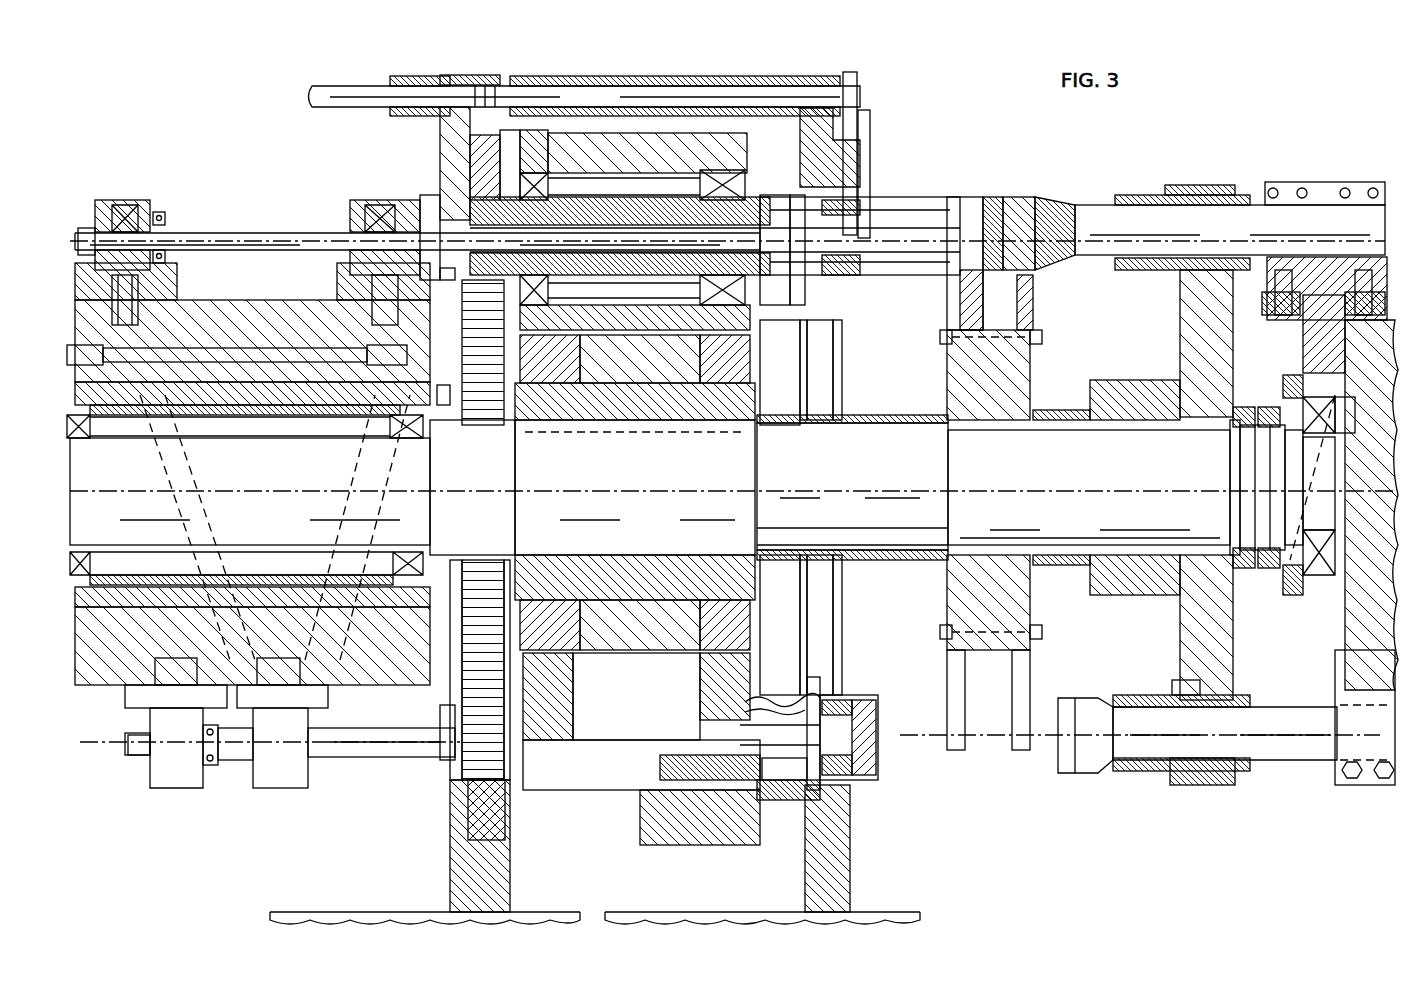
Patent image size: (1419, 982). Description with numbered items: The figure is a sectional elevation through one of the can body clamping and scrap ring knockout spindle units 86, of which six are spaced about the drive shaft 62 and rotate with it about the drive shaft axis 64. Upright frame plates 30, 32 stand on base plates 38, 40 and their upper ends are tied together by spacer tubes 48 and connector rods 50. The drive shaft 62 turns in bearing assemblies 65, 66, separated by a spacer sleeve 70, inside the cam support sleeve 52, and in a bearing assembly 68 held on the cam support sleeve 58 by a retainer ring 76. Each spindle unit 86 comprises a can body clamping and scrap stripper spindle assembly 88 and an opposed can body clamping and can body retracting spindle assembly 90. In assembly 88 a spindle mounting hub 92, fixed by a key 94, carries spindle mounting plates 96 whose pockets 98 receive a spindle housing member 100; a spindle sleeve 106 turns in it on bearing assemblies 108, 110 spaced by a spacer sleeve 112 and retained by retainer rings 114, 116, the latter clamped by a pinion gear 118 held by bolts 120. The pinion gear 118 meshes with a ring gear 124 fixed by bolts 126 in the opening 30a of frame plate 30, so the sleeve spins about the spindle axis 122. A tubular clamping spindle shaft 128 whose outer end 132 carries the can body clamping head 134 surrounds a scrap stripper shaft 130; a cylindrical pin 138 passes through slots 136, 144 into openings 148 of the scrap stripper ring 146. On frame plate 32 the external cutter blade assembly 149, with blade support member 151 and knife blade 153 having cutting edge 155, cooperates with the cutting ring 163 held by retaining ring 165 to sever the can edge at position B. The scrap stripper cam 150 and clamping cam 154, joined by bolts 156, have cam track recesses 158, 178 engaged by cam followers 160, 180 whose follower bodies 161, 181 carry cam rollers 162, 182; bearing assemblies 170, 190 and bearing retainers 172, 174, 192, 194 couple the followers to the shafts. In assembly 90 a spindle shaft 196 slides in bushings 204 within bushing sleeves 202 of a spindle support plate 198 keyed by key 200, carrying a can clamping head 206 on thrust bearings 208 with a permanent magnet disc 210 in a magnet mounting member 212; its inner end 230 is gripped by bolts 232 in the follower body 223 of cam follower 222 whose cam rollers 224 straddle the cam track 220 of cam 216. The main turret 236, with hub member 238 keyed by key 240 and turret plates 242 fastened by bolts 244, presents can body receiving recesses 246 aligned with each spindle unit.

The frame plate 30 is at (434, 879).
The radially stepped circular opening 30a is at (452, 800).
The frame plate 32 is at (866, 869).
The base plate 38 is at (322, 912).
The base plate 40 is at (888, 912).
The spacer tubes 48 is at (410, 76).
The connector rods 50 is at (355, 88).
The cam support sleeve 52 is at (262, 395).
The cam support sleeve 58 is at (1371, 505).
The drive shaft 62 is at (1037, 477).
The drive shaft axis 64 is at (826, 490).
The bearing assembly 65 is at (82, 440).
The bearing assembly 66 is at (437, 447).
The bearing assembly 68 is at (1298, 566).
The spacer sleeve 70 is at (300, 410).
The retainer ring 76 is at (1290, 598).
The spindle unit 86 is at (1129, 118).
The can body clamping and scrap stripper spindle assembly 88 is at (867, 347).
The can body clamping and can body retracting spindle assembly 90 is at (1149, 302).
The spindle mounting hub 92 is at (590, 430).
The key 94 is at (725, 432).
The spindle mounting plates 96 is at (545, 560).
The pockets 98 is at (568, 660).
The spindle housing member 100 is at (590, 197).
The spindle sleeve 106 is at (642, 282).
The bearing assembly 108 is at (532, 170).
The bearing assembly 110 is at (720, 178).
The spacer sleeve 112 is at (628, 172).
The retainer ring 114 is at (805, 150).
The retainer ring 116 is at (535, 172).
The pinion gear 118 is at (445, 190).
The bolts 120 is at (448, 282).
The spindle axis 122 is at (910, 250).
The ring gear 124 is at (480, 830).
The bolts 126 is at (455, 75).
The tubular clamping spindle shaft 128 is at (430, 198).
The scrap stripper shaft 130 is at (258, 232).
The outer end 132 is at (935, 225).
The can body clamping head 134 is at (960, 278).
The slots 136 is at (905, 215).
The cylindrical pin 138 is at (772, 300).
The slots 144 is at (800, 280).
The scrap stripper ring 146 is at (845, 280).
The openings 148 is at (812, 677).
The external cutter blade assembly 149 is at (894, 69).
The scrap stripper cam 150 is at (215, 318).
The blade support member 151 is at (850, 72).
The knife blade 153 is at (872, 130).
The clamping cam 154 is at (282, 298).
The cutting edge 155 is at (865, 175).
The bolts 156 is at (262, 348).
The cam track recess 158 is at (165, 462).
The cam follower 160 is at (155, 147).
The follower body 161 is at (140, 210).
The cam roller 162 is at (160, 282).
The cutting ring 163 is at (865, 255).
The retaining ring 165 is at (870, 205).
The bearing assemblies 170 is at (118, 200).
The bearing retainer 172 is at (165, 218).
The bearing retainer 174 is at (85, 228).
The cam track recess 178 is at (295, 517).
The cam follower 180 is at (356, 156).
The follower body 181 is at (360, 200).
The cam roller 182 is at (350, 292).
The bearing assemblies 190 is at (400, 200).
The bearing retainer 192 is at (330, 757).
The bearing retainer 194 is at (340, 230).
The spindle shaft 196 is at (1100, 262).
The spindle support plate 198 is at (1180, 348).
The key 200 is at (1110, 392).
The bushing sleeves 202 is at (1175, 185).
The bushings 204 is at (1135, 195).
The can clamping head 206 is at (1060, 210).
The thrust bearings 208 is at (1035, 285).
The permanent magnet disc 210 is at (988, 198).
The magnet mounting member 212 is at (1015, 200).
The cam 216 is at (1330, 331).
The cam track 220 is at (1310, 350).
The cam follower 222 is at (1357, 126).
The follower body 223 is at (1390, 216).
The cam rollers 224 is at (1350, 265).
The inner end 230 is at (1370, 182).
The bolts 232 is at (1345, 190).
The main turret 236 is at (1001, 784).
The hub member 238 is at (1045, 566).
The key 240 is at (1045, 412).
The turret plates 242 is at (1018, 700).
The bolts 244 is at (945, 632).
The can body receiving recesses 246 is at (962, 720).
The point B is at (945, 272).